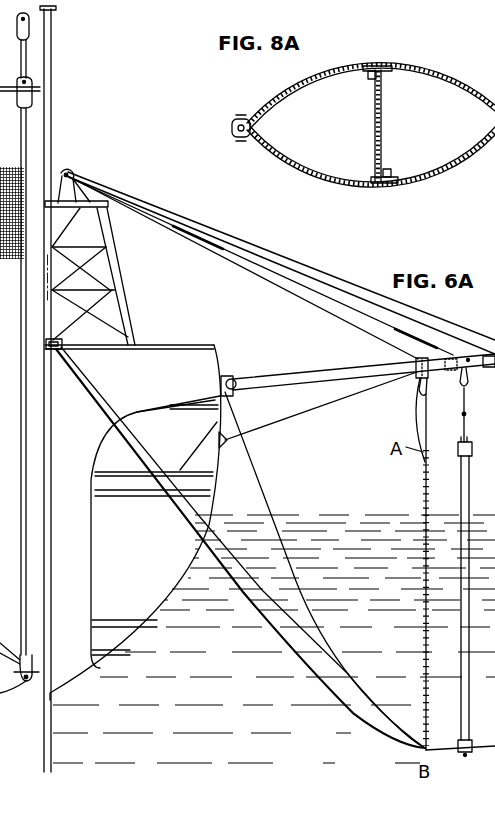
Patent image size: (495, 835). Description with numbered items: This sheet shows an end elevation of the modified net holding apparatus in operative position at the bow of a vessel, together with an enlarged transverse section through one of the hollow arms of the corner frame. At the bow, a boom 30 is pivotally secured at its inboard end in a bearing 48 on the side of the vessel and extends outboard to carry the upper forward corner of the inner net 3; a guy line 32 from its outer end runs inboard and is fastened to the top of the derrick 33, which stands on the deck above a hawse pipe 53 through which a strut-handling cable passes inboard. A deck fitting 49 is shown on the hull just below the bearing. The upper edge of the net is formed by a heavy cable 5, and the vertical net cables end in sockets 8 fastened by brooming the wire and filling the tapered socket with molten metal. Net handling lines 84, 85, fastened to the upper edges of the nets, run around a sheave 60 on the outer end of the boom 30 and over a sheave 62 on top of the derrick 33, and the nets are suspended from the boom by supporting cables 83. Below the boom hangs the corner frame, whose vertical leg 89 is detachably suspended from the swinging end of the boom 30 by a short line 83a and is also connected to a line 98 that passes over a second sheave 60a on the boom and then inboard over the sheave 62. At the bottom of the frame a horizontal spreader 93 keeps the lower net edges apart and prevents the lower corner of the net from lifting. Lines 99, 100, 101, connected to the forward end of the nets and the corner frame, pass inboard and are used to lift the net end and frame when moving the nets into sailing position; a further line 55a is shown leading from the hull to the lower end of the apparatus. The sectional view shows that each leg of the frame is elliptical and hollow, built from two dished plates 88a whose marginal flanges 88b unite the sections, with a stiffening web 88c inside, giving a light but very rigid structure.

In FIG. 6A, the heavy cable 5 is at (22, 60).
In FIG. 6A, the socket 8 is at (21, 100).
In FIG. 6A, the sheave 62 is at (73, 171).
In FIG. 6A, the guy line 32 is at (154, 218).
In FIG. 6A, the derrick 33 is at (117, 309).
In FIG. 6A, the hawse pipe 53 is at (64, 346).
In FIG. 6A, the bearing 48 is at (237, 379).
In FIG. 6A, the hull rail 49 is at (184, 408).
In FIG. 6A, the boom 30 is at (320, 372).
In FIG. 6A, the sheave 60 is at (414, 362).
In FIG. 6A, the sheave 60a is at (450, 374).
In FIG. 6A, the line 84 is at (324, 306).
In FIG. 6A, the line 85 is at (423, 332).
In FIG. 6A, the line 98 is at (441, 346).
In FIG. 6A, the supporting cable 83 is at (427, 418).
In FIG. 6A, the short line 83a is at (464, 380).
In FIG. 6A, the vertical leg 89 is at (467, 483).
In FIG. 6A, the horizontal spreader 93 is at (459, 753).
In FIG. 6A, the net line 55a is at (178, 508).
In FIG. 6A, the line 100 is at (249, 597).
In FIG. 6A, the line 101 is at (270, 513).
In FIG. 6A, the line 99 is at (275, 607).
In FIG. 6A, the inner net 3 is at (422, 598).
In FIG. 8A, the dished plate 88a is at (290, 154).
In FIG. 8A, the marginal flange 88b is at (233, 128).
In FIG. 8A, the stiffening web 88c is at (381, 116).